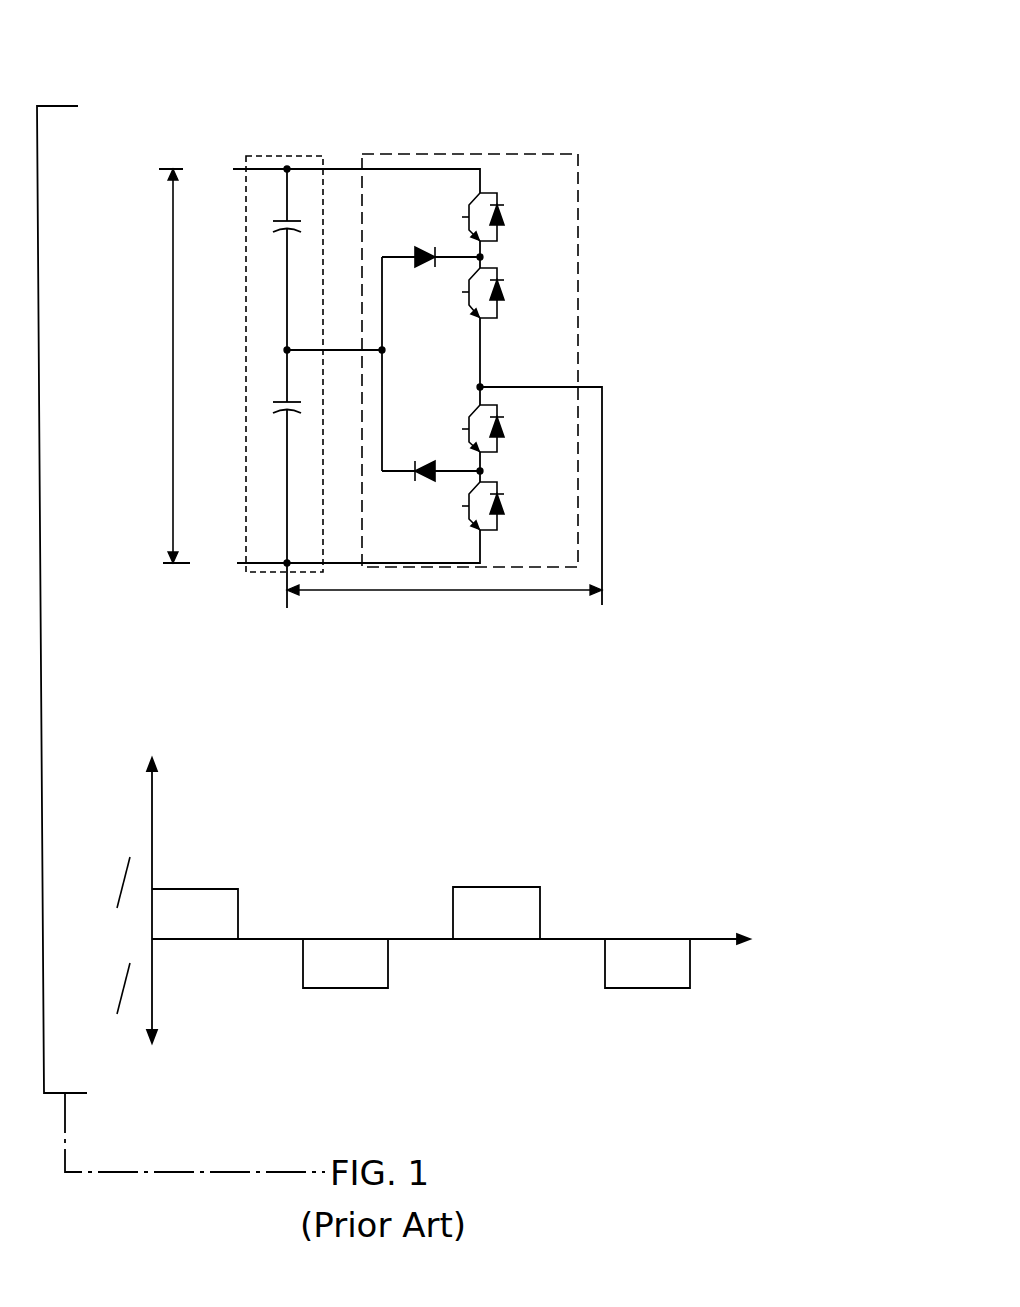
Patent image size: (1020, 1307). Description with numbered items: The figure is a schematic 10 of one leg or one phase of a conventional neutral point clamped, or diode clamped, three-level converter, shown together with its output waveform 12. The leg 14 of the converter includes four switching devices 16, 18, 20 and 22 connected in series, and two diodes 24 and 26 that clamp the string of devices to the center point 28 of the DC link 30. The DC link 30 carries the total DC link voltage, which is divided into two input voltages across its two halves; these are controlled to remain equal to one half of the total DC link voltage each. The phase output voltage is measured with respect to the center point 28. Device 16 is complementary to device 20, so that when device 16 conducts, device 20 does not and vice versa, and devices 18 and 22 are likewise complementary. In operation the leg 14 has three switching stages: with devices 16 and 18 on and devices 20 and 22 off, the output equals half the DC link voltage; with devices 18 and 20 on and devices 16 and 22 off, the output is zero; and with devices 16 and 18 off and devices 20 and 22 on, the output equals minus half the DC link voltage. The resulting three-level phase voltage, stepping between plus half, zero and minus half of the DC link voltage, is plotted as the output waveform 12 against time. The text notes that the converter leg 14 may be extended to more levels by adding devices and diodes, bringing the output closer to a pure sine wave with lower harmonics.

The schematic 10 is at (618, 60).
The output waveform 12 is at (627, 762).
The leg 14 is at (540, 155).
The switching device 16 is at (496, 193).
The switching device 18 is at (496, 269).
The switching device 20 is at (502, 417).
The switching device 22 is at (502, 483).
The diode 24 is at (421, 252).
The diode 26 is at (423, 466).
The center point 28 is at (285, 349).
The DC link 30 is at (285, 156).